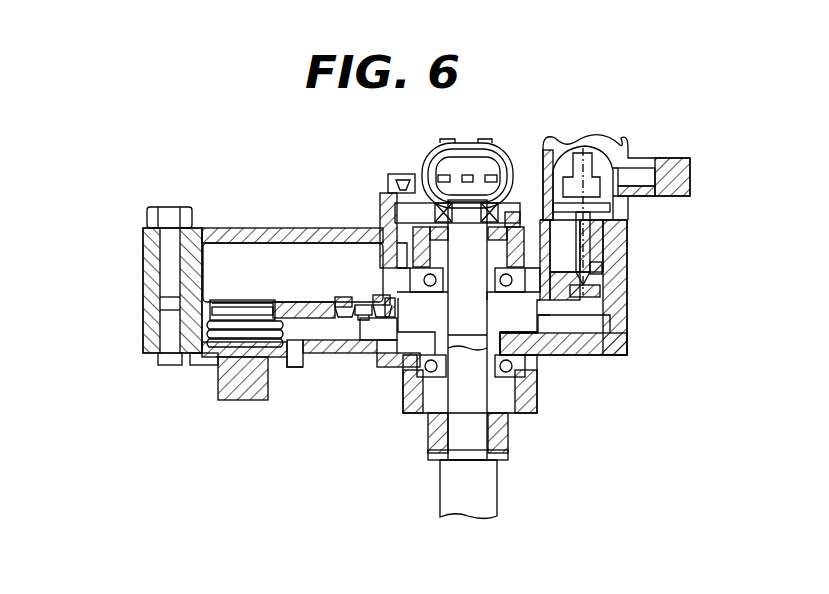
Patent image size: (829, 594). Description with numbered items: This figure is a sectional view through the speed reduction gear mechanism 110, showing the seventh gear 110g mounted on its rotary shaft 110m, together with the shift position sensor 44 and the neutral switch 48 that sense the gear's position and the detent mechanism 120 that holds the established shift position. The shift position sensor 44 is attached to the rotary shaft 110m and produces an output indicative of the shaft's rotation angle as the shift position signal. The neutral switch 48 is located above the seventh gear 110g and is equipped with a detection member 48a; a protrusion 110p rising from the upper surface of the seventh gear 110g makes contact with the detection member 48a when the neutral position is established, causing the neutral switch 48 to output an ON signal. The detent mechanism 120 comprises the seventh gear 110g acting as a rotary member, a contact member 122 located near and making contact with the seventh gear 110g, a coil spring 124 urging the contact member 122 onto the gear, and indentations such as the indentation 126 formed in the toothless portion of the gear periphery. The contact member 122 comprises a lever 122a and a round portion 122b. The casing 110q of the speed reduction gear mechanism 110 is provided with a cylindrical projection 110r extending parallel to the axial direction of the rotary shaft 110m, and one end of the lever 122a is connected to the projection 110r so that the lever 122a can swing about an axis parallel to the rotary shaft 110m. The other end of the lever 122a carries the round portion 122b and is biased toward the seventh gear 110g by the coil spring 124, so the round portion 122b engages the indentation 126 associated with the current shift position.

The speed reduction gear mechanism 110 is at (195, 172).
The detent mechanism 120 is at (282, 283).
The contact member 122 is at (333, 322).
The lever 122a is at (310, 330).
The round portion 122b is at (345, 305).
The indentation 126 is at (370, 297).
The coil spring 124 is at (212, 348).
The cylindrical projection 110r is at (218, 300).
The casing 110q is at (295, 367).
The shift position sensor 44 is at (475, 148).
The rotary shaft 110m is at (475, 427).
The seventh gear 110g is at (515, 322).
The neutral switch 48 is at (568, 150).
The detection member 48a is at (600, 280).
The protrusion 110p is at (605, 290).